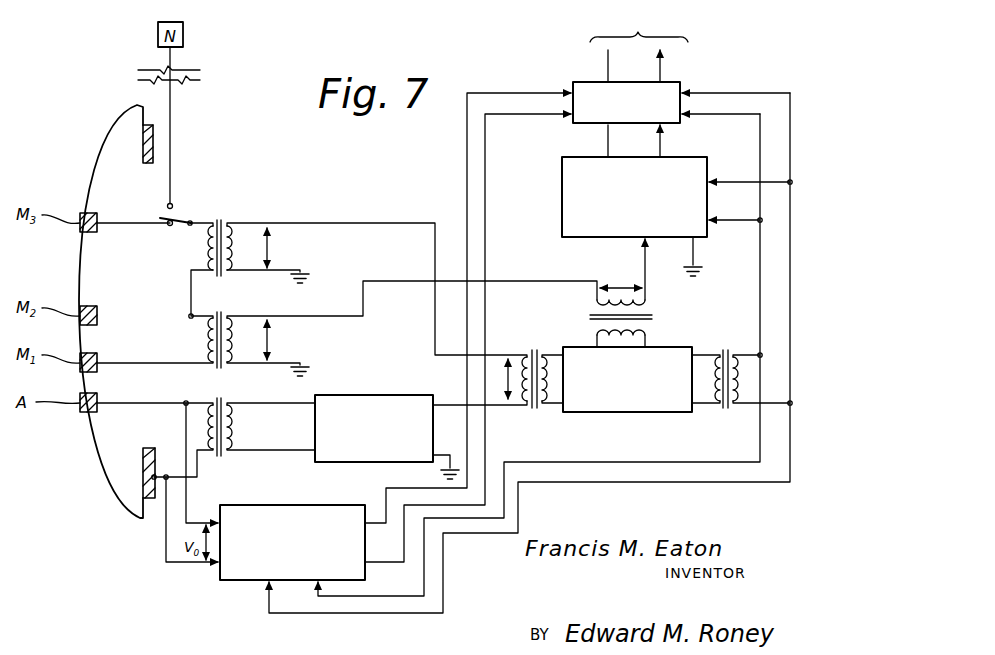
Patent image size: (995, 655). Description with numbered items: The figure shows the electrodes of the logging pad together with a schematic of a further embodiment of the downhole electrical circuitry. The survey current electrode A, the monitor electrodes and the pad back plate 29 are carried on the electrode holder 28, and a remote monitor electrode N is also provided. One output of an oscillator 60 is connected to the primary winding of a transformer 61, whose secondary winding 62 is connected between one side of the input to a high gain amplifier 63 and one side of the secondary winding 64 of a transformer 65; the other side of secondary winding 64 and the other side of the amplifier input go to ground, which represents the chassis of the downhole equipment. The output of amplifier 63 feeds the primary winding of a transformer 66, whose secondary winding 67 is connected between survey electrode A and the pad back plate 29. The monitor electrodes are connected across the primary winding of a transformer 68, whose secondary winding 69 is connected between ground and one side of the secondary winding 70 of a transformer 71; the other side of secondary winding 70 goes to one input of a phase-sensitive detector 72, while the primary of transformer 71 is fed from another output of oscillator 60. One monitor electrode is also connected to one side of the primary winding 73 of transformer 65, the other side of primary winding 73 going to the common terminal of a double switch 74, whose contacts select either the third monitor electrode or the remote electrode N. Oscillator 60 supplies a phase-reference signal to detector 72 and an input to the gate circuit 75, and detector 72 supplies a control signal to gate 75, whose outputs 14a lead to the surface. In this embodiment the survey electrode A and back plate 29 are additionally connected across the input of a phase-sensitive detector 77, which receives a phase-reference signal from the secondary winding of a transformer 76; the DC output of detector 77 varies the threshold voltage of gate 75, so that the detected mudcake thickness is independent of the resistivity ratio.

The electrode holder 28 is at (88, 160).
The pad back plate 29 is at (143, 468).
The double switch 74 is at (180, 217).
The primary winding 73 is at (202, 248).
The transformer 65 is at (219, 220).
The secondary winding 64 is at (238, 236).
The transformer 68 is at (219, 318).
The secondary winding 69 is at (238, 334).
The secondary winding 67 is at (206, 418).
The transformer 66 is at (221, 400).
The high gain amplifier 63 is at (385, 395).
The transformer 61 is at (531, 350).
The secondary winding 62 is at (544, 403).
The oscillator 60 is at (642, 412).
The secondary winding 70 is at (628, 297).
The transformer 71 is at (590, 318).
The transformer 76 is at (726, 350).
The gate circuit 75 is at (682, 82).
The output leads to surface 14a is at (657, 66).
The phase-sensitive detector 72 is at (562, 176).
The phase-sensitive detector 77 is at (286, 505).